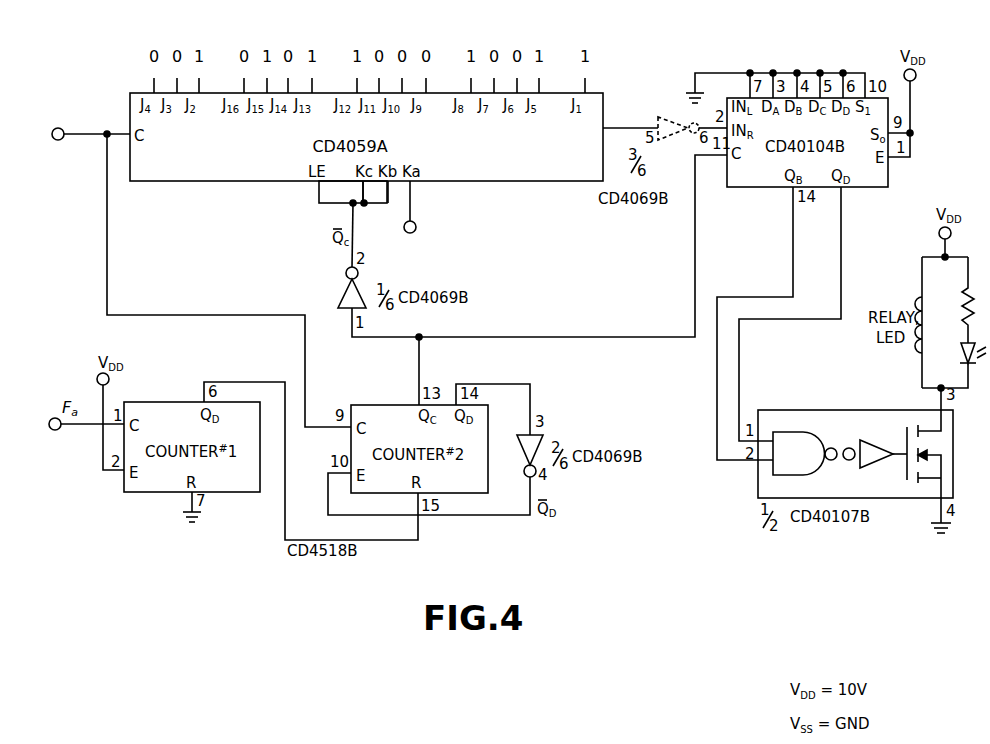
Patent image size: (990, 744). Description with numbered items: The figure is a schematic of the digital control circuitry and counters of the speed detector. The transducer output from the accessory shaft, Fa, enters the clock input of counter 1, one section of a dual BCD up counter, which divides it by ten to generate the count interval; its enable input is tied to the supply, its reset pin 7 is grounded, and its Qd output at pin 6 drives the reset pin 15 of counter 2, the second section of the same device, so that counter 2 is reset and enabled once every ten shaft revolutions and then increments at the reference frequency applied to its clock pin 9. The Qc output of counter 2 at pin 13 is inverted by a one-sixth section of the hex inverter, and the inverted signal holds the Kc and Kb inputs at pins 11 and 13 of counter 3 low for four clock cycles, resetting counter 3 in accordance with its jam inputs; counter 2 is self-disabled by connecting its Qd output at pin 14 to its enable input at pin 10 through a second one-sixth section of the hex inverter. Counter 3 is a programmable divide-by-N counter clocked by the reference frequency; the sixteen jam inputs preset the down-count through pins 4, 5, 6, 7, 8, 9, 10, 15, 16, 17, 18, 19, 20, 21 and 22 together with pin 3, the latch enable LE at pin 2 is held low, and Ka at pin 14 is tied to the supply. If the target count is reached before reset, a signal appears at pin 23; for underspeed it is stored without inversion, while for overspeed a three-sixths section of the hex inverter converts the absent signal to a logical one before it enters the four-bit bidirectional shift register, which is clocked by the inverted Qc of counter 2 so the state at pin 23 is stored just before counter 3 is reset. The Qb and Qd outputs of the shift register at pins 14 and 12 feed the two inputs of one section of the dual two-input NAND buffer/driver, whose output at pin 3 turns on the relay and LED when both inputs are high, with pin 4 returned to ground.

The counter 1 is at (91, 124).
The control circuit counter 2 is at (353, 192).
The programmable divide-by-N counter 3 is at (591, 84).
The jam input pin J2 of CD4059A 4 is at (205, 84).
The jam input pin J3 of CD4059A 5 is at (183, 84).
The jam input pin J4 of CD4059A 6 is at (160, 84).
The jam input pin J16 of CD4059A 7 is at (250, 84).
The jam input pin J15 of CD4059A 8 is at (273, 84).
The jam input pin J14 of CD4059A 9 is at (294, 84).
The jam input pin J13 of CD4059A 10 is at (323, 84).
The mode input pin Kc of CD4059A 11 is at (374, 192).
The output pin QD of CD40104B shift register 12 is at (801, 314).
The mode input pin Kb of CD4059A 13 is at (399, 192).
The mode input pin Ka of CD4059A 14 is at (415, 218).
The jam input pin J12 of CD4059A 15 is at (368, 84).
The jam input pin J11 of CD4059A 16 is at (390, 84).
The jam input pin J10 of CD4059A 17 is at (413, 84).
The jam input pin J9 of CD4059A 18 is at (437, 84).
The jam input pin J8 of CD4059A 19 is at (482, 84).
The jam input pin J7 of CD4059A 20 is at (505, 84).
The jam input pin J6 of CD4059A 21 is at (528, 84).
The jam input pin J5 of CD4059A 22 is at (550, 84).
The output pin 23 is at (630, 118).